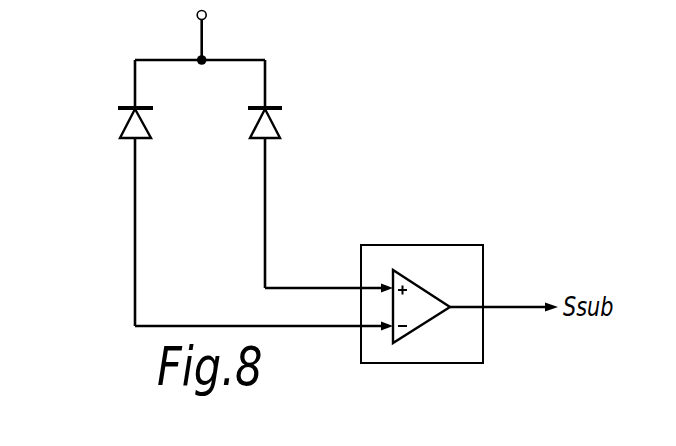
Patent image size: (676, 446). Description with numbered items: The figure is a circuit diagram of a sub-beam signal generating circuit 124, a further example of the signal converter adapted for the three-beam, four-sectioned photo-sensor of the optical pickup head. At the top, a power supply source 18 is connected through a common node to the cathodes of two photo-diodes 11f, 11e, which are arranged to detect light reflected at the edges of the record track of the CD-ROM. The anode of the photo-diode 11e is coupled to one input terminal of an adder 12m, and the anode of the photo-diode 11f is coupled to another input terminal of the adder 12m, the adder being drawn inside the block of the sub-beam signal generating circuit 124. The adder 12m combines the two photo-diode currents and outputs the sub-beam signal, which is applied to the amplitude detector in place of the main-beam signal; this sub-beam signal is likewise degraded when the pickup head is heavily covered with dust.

The power supply source 18 is at (207, 14).
The photo-diode 11f is at (119, 132).
The photo-diode 11e is at (279, 133).
The sub-beam signal generating circuit 124 is at (394, 245).
The adder 12m is at (440, 300).